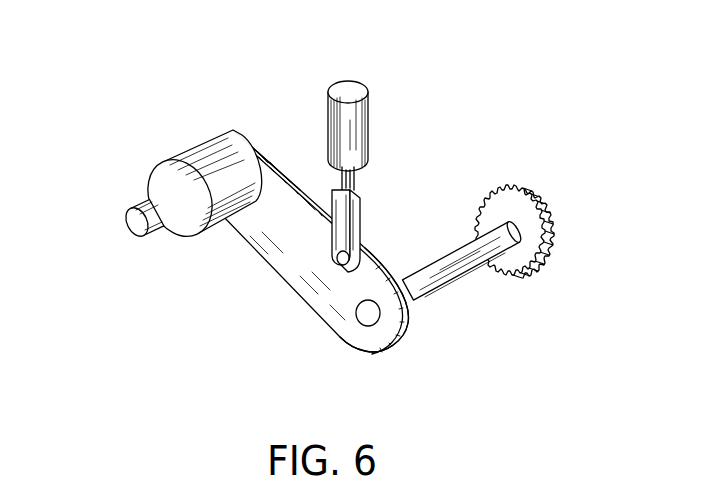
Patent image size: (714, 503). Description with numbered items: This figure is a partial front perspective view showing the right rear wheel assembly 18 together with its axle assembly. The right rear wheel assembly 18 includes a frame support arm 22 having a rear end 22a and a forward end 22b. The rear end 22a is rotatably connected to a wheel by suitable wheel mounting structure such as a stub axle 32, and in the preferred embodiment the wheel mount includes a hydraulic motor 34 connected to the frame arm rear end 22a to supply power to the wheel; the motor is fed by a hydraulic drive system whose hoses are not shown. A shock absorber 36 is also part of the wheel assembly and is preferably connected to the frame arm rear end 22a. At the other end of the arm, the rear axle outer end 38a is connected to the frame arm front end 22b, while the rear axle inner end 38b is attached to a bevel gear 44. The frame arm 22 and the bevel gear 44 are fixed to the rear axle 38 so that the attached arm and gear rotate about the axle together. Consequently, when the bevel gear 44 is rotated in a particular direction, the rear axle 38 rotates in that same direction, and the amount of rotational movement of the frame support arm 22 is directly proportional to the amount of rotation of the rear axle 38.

The right rear wheel assembly 18 is at (236, 128).
The frame support arm 22 is at (280, 242).
The rear end of frame support arm 22a is at (257, 138).
The forward end of frame support arm 22b is at (392, 318).
The stub axle 32 is at (127, 217).
The hydraulic motor 34 is at (183, 238).
The shock absorber 36 is at (368, 118).
The rear axle 38 is at (480, 260).
The rear axle outer end 38a is at (362, 320).
The rear axle inner end 38b is at (537, 270).
The bevel gear 44 is at (563, 223).